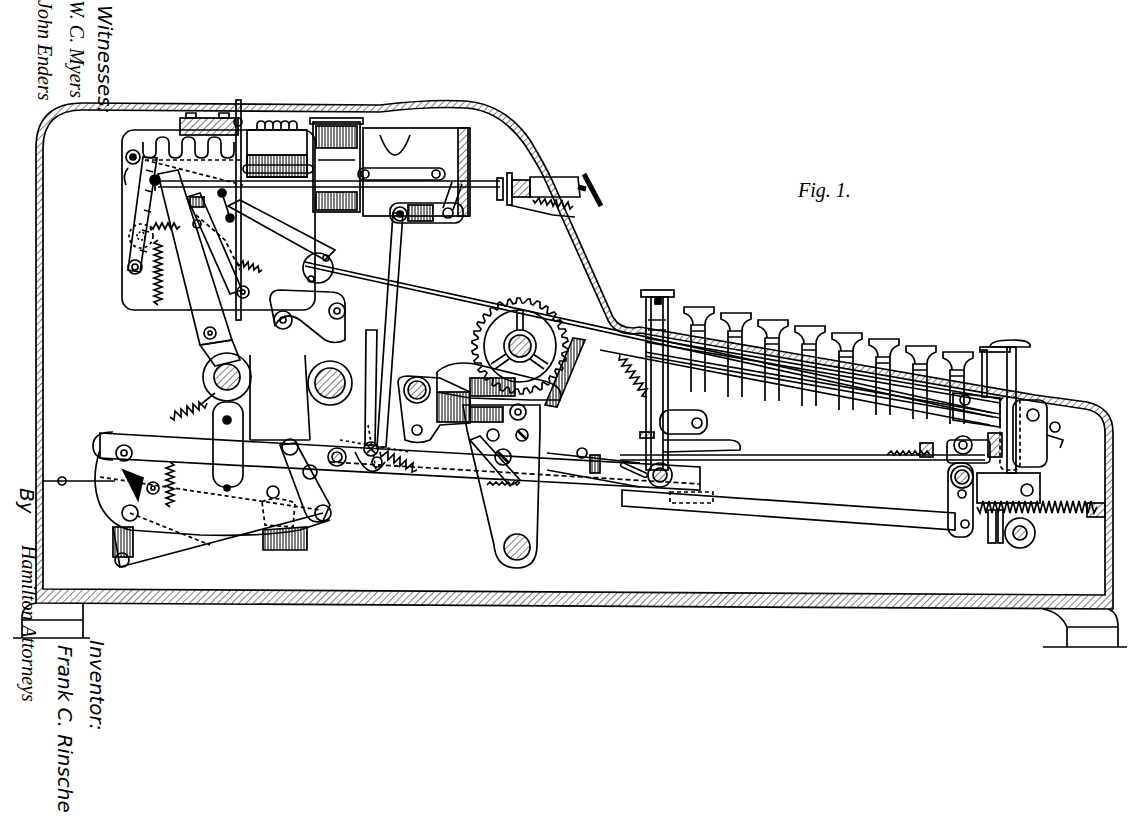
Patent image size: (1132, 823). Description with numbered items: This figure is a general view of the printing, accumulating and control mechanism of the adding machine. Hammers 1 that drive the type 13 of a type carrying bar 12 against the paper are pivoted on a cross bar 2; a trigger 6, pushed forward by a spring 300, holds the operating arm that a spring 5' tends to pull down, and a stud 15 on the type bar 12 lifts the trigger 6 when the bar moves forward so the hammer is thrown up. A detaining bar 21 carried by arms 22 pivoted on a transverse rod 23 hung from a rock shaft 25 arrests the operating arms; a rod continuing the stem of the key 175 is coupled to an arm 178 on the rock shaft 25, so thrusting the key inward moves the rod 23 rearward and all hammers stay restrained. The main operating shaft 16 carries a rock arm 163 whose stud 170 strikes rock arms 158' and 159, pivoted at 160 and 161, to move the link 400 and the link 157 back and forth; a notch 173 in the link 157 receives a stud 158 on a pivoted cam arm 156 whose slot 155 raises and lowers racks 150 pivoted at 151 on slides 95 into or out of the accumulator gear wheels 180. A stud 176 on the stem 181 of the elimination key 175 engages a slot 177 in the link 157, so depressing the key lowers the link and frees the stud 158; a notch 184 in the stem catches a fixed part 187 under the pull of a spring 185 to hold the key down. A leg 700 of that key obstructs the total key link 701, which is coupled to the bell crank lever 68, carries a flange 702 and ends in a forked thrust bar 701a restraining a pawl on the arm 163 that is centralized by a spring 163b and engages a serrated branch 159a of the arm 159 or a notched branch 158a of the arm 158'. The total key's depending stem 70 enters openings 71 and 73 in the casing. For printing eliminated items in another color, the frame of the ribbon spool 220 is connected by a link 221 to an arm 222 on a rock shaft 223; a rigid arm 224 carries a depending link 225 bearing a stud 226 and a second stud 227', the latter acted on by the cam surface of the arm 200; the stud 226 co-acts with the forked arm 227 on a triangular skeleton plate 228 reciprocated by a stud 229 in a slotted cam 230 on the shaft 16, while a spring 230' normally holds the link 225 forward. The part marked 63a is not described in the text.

The hammer 1 is at (333, 262).
The cross bar 2 is at (228, 193).
The spring 5' is at (139, 277).
The trigger 6 is at (212, 262).
The type carrying bar 12 is at (240, 210).
The type 13 is at (287, 135).
The stud 15 is at (247, 288).
The main operating shaft 16 is at (212, 375).
The detaining bar 21 is at (135, 188).
The arm 22 is at (125, 178).
The transverse rod 23 is at (132, 253).
The rock shaft 25 is at (128, 272).
The rod 63a is at (58, 478).
The bell crank lever 68 is at (1000, 475).
The second depending stem 70 is at (995, 368).
The opening 71 is at (990, 380).
The opening 73 is at (1040, 396).
The slide 95 is at (811, 458).
The rack 150 is at (545, 405).
The pivot 151 is at (705, 427).
The slot 155 is at (499, 371).
The cam arm 156 is at (501, 486).
The link 157 is at (612, 470).
The stud 158 is at (483, 486).
The rock arm 158' is at (319, 440).
The notched branch 158a is at (272, 554).
The rock arm 159 is at (118, 443).
The serrated branch 159a is at (192, 536).
The pivot 160 is at (122, 516).
The pivot 161 is at (328, 524).
The rock arm 163 is at (198, 405).
The centralizing spring 163b is at (172, 397).
The stud 170 is at (120, 480).
The notch 173 is at (450, 475).
The elimination key 175 is at (592, 188).
The stud 176 is at (659, 490).
The slot 177 is at (637, 482).
The arm 178 is at (130, 243).
The gear wheel 180 is at (566, 320).
The stem 181 is at (668, 320).
The notch 184 is at (675, 416).
The spring 185 is at (631, 377).
The fixed part 187 is at (640, 433).
The arm 200 is at (436, 464).
The ribbon spool 220 is at (358, 120).
The link 221 is at (407, 170).
The arm 222 is at (457, 185).
The rock shaft 223 is at (457, 213).
The rigid arm 224 is at (423, 224).
The depending link 225 is at (397, 247).
The stud 226 is at (400, 380).
The arm 227 is at (360, 387).
The second stud 227' is at (368, 435).
The triangular skeleton plate 228 is at (323, 316).
The stud 229 is at (302, 377).
The slotted cam 230 is at (297, 397).
The spring 230' is at (394, 475).
The spring 300 is at (192, 312).
The link 400 is at (142, 440).
The leg 700 is at (700, 447).
The total key link 701 is at (822, 508).
The forked thrust bar 701a is at (329, 510).
The flange 702 is at (700, 505).